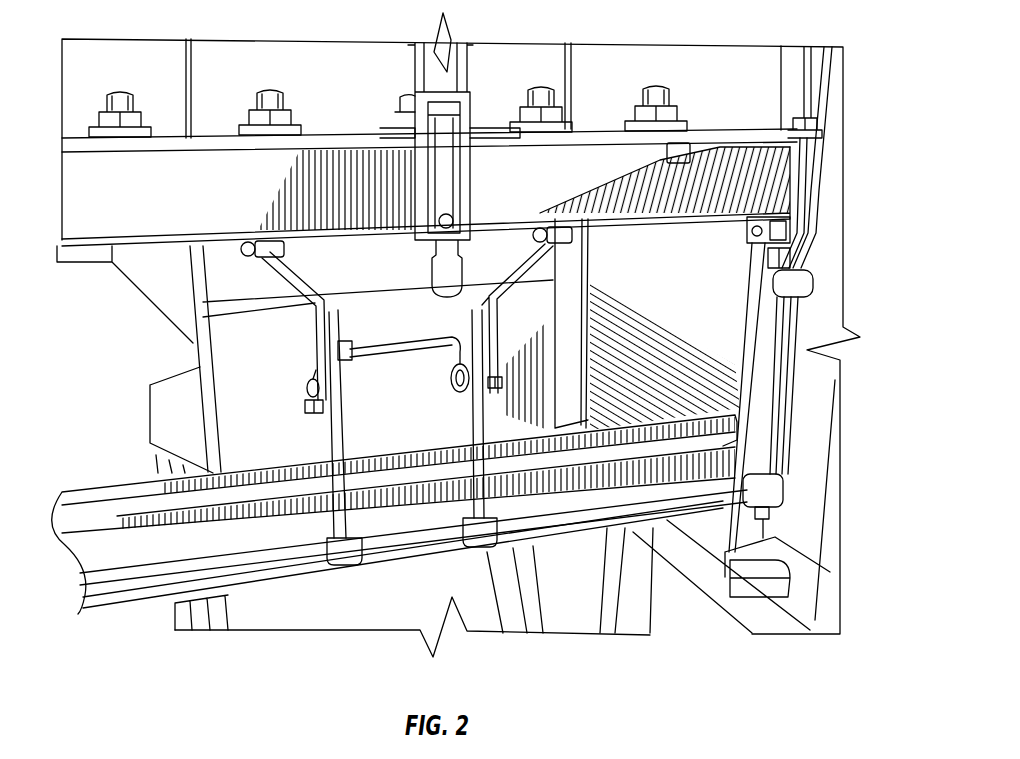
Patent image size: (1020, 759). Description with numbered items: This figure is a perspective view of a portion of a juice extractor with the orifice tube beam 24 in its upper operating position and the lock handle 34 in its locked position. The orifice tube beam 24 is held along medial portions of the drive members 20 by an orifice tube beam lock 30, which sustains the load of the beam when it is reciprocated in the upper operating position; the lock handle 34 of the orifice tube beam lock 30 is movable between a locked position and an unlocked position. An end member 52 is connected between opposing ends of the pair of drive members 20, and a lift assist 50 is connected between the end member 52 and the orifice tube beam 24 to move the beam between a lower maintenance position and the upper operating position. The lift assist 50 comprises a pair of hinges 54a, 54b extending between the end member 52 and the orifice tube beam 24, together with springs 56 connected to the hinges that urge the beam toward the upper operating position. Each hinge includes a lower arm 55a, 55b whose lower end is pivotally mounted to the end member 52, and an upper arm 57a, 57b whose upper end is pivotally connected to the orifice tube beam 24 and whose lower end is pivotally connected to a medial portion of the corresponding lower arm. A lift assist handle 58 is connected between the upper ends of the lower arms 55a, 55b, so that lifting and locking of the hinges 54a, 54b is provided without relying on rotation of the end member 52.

The drive members 20 is at (805, 93).
The orifice tube beam 24 is at (93, 208).
The orifice tube beam locks 30 is at (766, 258).
The lock handle 34 is at (806, 190).
The lift assist 50 is at (301, 383).
The end member 52 is at (78, 598).
The hinge 54a is at (302, 411).
The hinge 54b is at (509, 385).
The lower arm 55a is at (337, 523).
The lower arm 55b is at (484, 503).
The springs 56 is at (455, 376).
The upper arm 57a is at (292, 293).
The upper arm 57b is at (505, 282).
The lift assist handle 58 is at (408, 353).